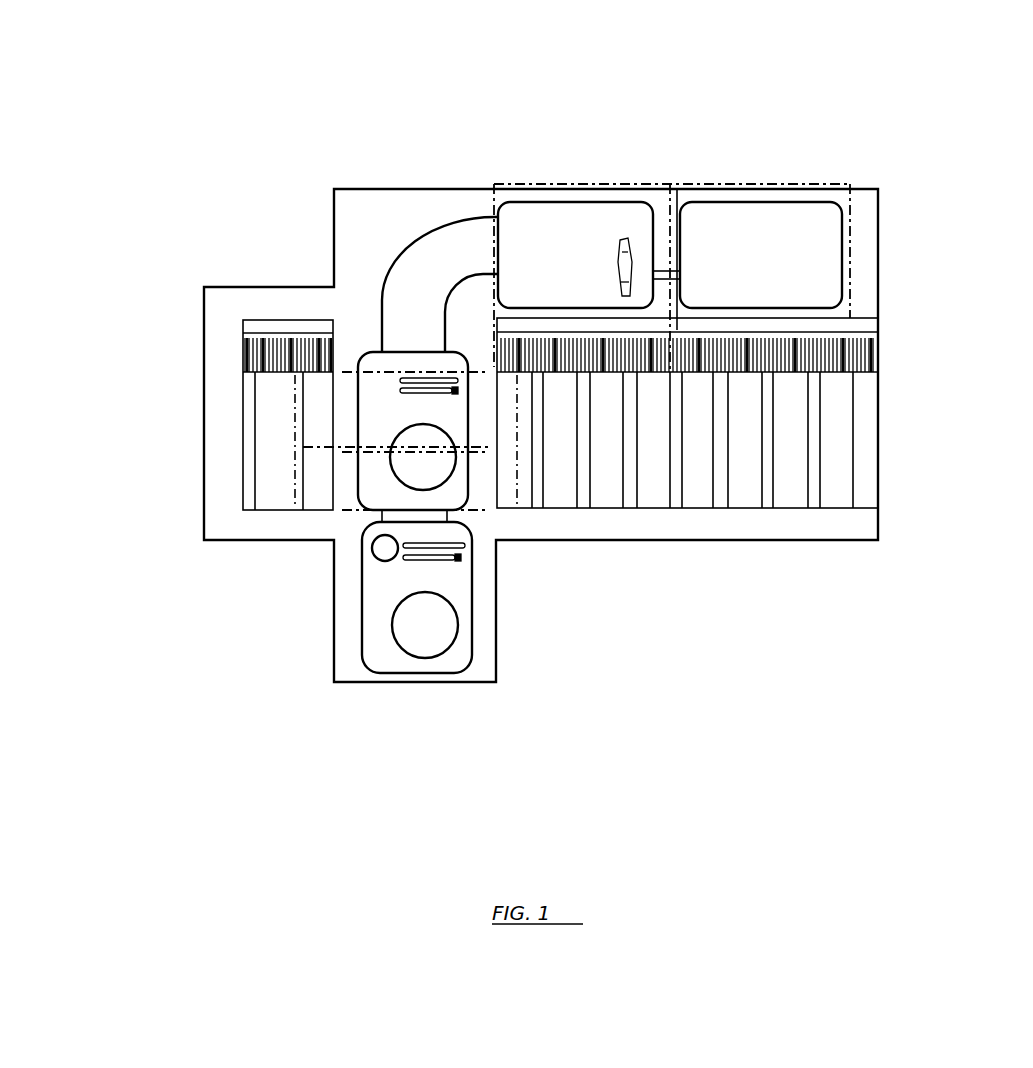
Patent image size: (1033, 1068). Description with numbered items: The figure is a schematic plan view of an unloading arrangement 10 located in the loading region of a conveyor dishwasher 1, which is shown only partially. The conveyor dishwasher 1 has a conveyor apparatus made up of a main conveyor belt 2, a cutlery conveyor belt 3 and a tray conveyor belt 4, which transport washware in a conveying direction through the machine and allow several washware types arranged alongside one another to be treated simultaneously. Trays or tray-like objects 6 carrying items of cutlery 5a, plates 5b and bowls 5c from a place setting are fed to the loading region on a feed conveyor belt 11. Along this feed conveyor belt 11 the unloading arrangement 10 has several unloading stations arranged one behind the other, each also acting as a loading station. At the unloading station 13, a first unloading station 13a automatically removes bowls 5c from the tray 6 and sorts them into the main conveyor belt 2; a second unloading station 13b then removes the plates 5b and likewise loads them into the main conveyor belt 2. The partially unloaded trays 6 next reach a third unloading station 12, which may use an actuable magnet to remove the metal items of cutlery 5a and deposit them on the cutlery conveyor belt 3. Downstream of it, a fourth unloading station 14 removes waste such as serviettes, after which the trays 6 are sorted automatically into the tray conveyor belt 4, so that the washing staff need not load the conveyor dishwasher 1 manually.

The conveyor dishwasher 1 is at (919, 432).
The main conveyor belt 2 is at (647, 483).
The cutlery conveyor belt 3 is at (253, 353).
The tray conveyor belt 4 is at (310, 332).
The items of cutlery 5a is at (624, 255).
The plates 5b is at (430, 650).
The bowls 5c is at (371, 556).
The trays or tray-like objects 6 is at (531, 218).
The unloading arrangement 10 is at (411, 59).
The feed conveyor belt 11 is at (430, 258).
The third unloading station 12 is at (670, 72).
The unloading station 13 is at (270, 418).
The first unloading station 13a is at (350, 467).
The second unloading station 13b is at (350, 407).
The fourth unloading station 14 is at (727, 218).